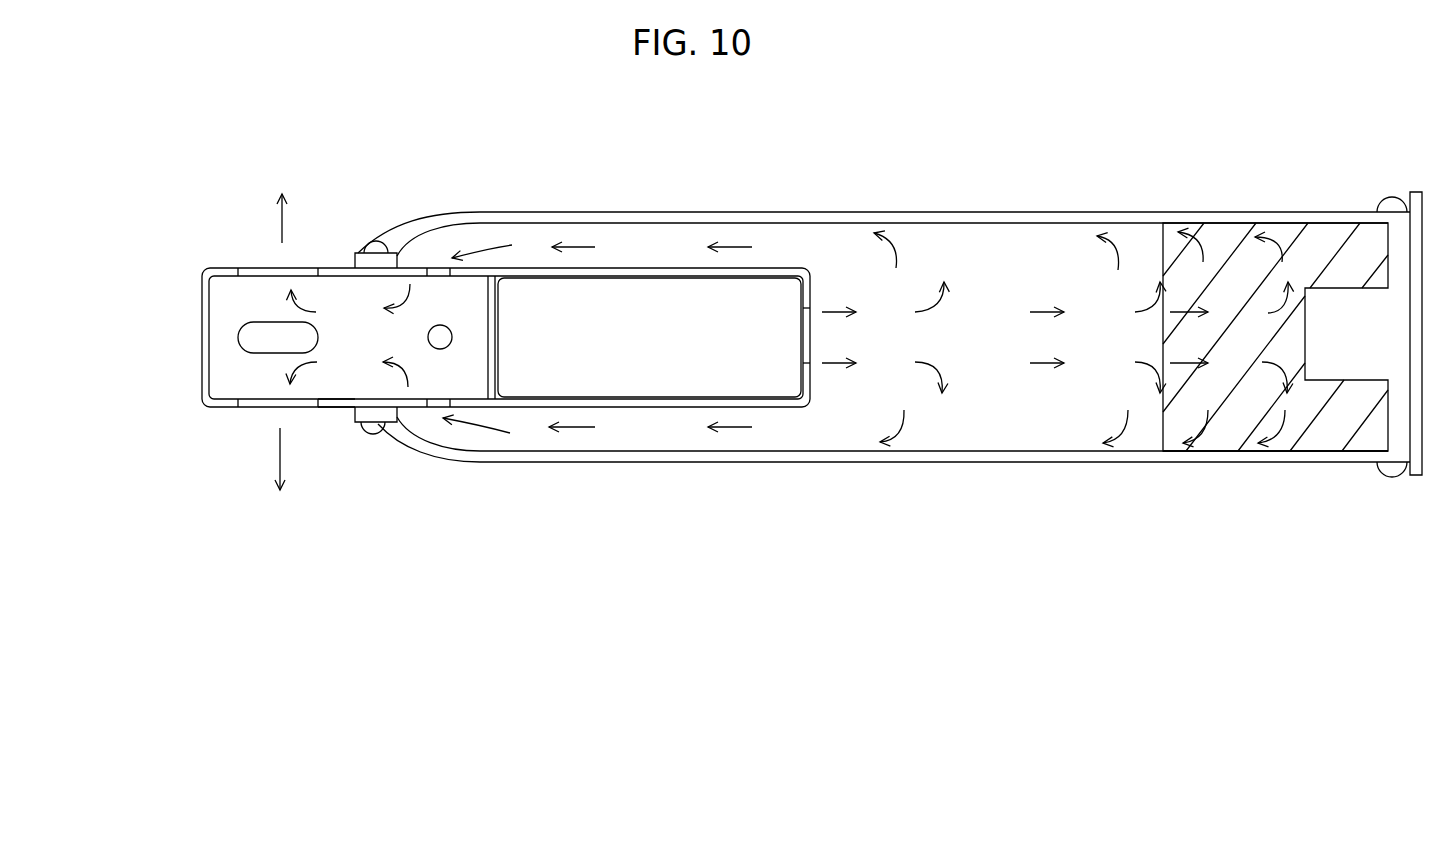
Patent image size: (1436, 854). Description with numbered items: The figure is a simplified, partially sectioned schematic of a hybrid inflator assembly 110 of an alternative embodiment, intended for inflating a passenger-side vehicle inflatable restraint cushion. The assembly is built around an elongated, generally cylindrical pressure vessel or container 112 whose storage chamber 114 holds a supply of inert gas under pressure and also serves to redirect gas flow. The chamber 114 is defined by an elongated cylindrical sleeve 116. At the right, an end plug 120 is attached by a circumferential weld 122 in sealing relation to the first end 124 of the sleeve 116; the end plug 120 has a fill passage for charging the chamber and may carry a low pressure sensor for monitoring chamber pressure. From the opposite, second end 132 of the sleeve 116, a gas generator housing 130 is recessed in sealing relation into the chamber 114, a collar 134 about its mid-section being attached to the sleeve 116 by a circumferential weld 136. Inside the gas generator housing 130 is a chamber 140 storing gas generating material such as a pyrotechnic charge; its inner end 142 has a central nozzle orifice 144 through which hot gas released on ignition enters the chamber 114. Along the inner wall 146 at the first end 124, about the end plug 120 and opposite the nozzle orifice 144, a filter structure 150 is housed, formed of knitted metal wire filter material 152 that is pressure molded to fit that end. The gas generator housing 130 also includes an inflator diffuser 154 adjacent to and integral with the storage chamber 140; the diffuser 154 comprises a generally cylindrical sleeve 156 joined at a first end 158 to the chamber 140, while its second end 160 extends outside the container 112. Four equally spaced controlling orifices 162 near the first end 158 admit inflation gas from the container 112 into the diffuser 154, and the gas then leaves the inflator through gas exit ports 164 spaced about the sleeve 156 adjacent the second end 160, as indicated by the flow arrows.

The hybrid inflator assembly 110 is at (985, 88).
The pressure vessel or container 112 is at (671, 457).
The storage chamber 114 is at (985, 415).
The elongated cylindrical sleeve 116 is at (1003, 212).
The end plug 120 is at (1407, 437).
The circumferential weld 122 is at (1387, 206).
The first end of the sleeve 124 is at (1350, 213).
The gas generator housing 130 is at (683, 267).
The second end of the sleeve 132 is at (424, 228).
The collar 134 is at (358, 268).
The circumferential weld 136 is at (370, 440).
The chamber 140 is at (745, 373).
The inner end 142 is at (813, 280).
The nozzle orifice 144 is at (807, 343).
The inner wall 146 is at (1300, 450).
The filter structure 150 is at (1185, 407).
The filter material 152 is at (1243, 280).
The inflator diffuser 154 is at (330, 408).
The cylindrical sleeve 156 is at (217, 268).
The first end of the diffuser 158 is at (487, 272).
The second end of the diffuser 160 is at (203, 403).
The controlling orifices 162 is at (427, 270).
The gas exit ports 164 is at (245, 268).